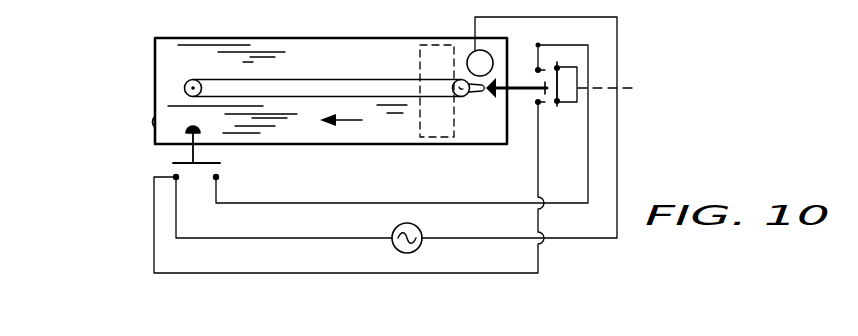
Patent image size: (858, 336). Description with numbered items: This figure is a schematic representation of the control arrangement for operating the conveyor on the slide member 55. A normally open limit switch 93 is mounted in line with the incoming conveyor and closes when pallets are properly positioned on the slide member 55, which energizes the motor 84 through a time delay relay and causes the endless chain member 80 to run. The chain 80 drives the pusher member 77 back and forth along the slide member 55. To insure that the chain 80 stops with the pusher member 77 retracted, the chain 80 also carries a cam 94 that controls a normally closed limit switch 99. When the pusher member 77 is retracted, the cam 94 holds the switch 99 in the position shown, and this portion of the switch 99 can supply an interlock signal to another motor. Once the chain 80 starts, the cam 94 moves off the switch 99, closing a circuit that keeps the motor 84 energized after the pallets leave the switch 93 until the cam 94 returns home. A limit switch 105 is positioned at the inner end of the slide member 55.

The slide member 55 is at (157, 55).
The limit switch 105 is at (153, 122).
The endless chain member 80 is at (321, 80).
The motor 84 is at (470, 52).
The pusher member 77 is at (417, 137).
The cam 94 is at (477, 94).
The normally closed limit switch 99 is at (533, 97).
The normally open limit switch 93 is at (297, 189).